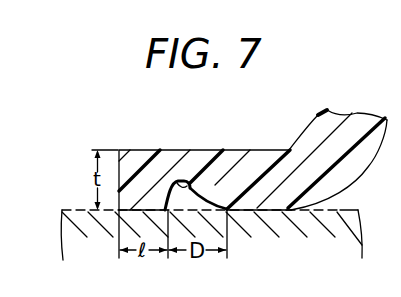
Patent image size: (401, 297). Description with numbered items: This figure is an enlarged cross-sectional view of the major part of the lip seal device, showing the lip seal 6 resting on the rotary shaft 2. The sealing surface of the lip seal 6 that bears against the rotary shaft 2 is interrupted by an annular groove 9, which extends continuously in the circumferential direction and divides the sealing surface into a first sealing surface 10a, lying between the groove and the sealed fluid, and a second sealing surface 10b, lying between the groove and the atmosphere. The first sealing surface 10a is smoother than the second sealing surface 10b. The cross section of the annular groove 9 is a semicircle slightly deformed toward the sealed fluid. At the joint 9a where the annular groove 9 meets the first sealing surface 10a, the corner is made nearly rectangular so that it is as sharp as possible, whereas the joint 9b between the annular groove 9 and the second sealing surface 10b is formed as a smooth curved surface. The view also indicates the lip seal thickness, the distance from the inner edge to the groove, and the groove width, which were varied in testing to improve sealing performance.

The rotary shaft 2 is at (335, 207).
The lip seal 6 is at (289, 141).
The annular groove 9 is at (183, 181).
The joint of the annular groove and the first sealing surface 9a is at (165, 206).
The joint of the annular groove and the second sealing surface 9b is at (225, 208).
The first sealing surface 10a is at (124, 220).
The second sealing surface 10b is at (255, 212).